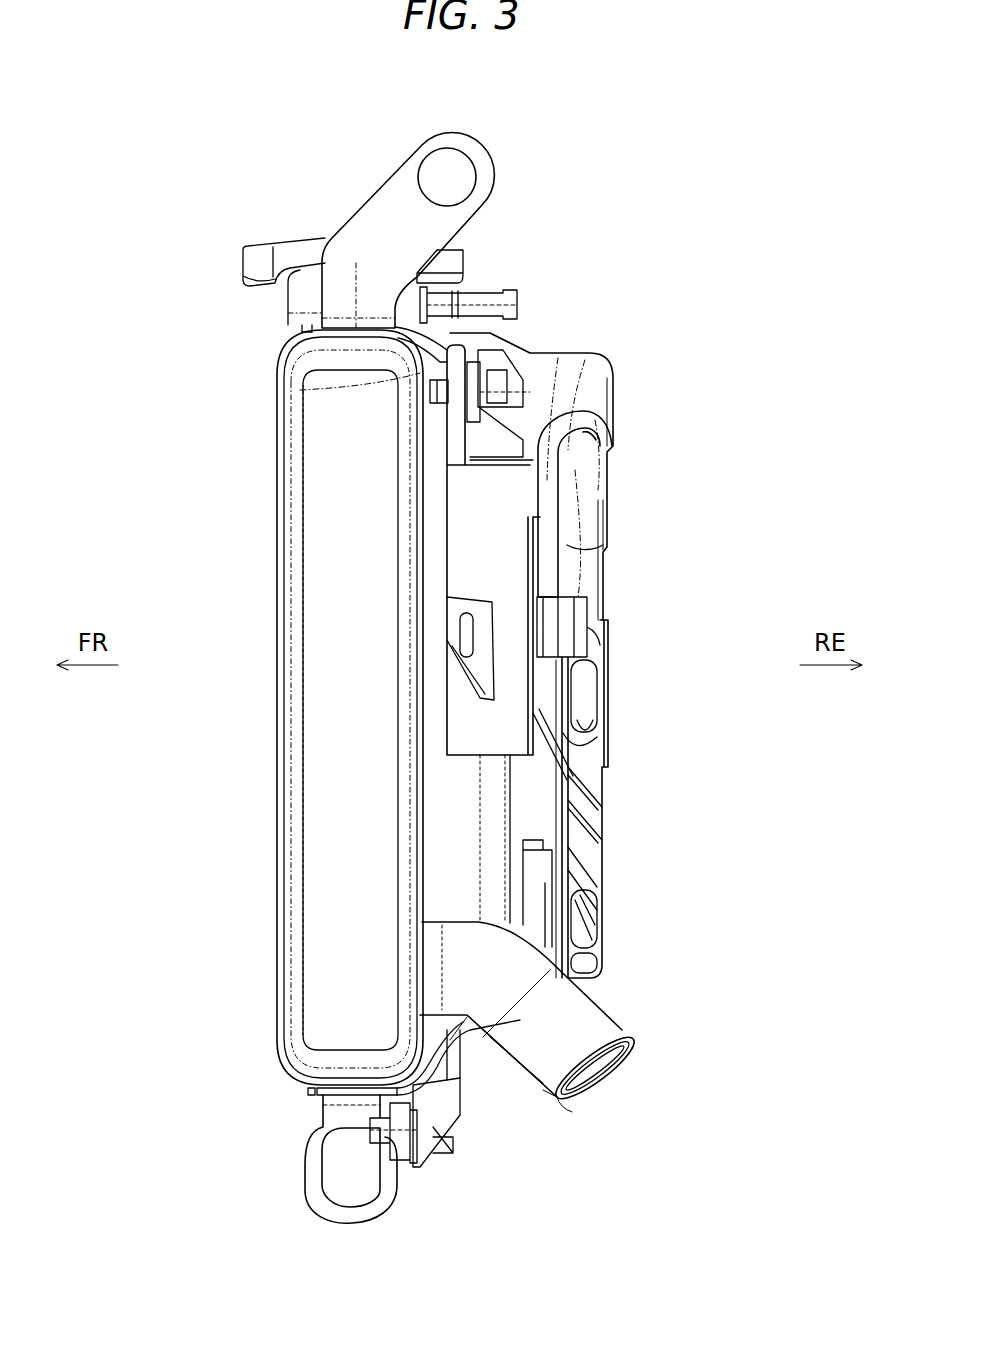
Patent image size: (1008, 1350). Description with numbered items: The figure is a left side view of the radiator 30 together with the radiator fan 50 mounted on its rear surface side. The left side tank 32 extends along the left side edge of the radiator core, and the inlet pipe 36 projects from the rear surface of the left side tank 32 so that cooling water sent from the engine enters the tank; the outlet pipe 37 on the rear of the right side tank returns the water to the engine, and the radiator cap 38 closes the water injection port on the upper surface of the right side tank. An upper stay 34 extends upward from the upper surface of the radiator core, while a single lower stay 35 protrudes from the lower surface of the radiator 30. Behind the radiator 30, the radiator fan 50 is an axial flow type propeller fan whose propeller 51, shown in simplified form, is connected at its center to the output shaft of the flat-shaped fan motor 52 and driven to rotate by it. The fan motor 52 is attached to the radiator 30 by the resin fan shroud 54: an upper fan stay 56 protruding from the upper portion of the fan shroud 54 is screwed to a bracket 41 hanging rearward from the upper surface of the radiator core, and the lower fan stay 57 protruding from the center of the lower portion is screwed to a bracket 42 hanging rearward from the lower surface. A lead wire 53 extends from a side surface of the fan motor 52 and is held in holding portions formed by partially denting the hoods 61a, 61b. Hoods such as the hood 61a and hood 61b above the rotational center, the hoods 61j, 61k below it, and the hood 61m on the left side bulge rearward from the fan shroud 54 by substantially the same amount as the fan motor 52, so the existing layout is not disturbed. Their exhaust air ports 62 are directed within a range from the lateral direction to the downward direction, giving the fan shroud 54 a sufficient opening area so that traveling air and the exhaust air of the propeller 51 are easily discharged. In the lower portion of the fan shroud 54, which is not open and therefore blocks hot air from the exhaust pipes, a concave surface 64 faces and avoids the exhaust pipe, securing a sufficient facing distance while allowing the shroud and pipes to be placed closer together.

The radiator 30 is at (210, 365).
The left side tank 32 is at (290, 630).
The upper stay 34 is at (478, 143).
The lower stay 35 is at (330, 1213).
The inlet pipe 36 is at (590, 1010).
The outlet pipe 37 is at (520, 1078).
The radiator cap 38 is at (256, 240).
The bracket 41 is at (300, 390).
The bracket 42 is at (370, 1125).
The radiator fan 50 is at (596, 617).
The propeller 51 is at (452, 843).
The fan motor 52 is at (612, 632).
The lead wire 53 is at (548, 484).
The fan shroud 54 is at (542, 356).
The upper fan stay 56 is at (498, 355).
The lower fan stay 57 is at (432, 1125).
The hood 61a is at (610, 412).
The hood 61b is at (588, 576).
The hood 61j is at (605, 830).
The hood 61k is at (605, 905).
The hood 61m is at (605, 707).
The exhaust air port 62 is at (595, 738).
The concave surface 64 is at (467, 1022).